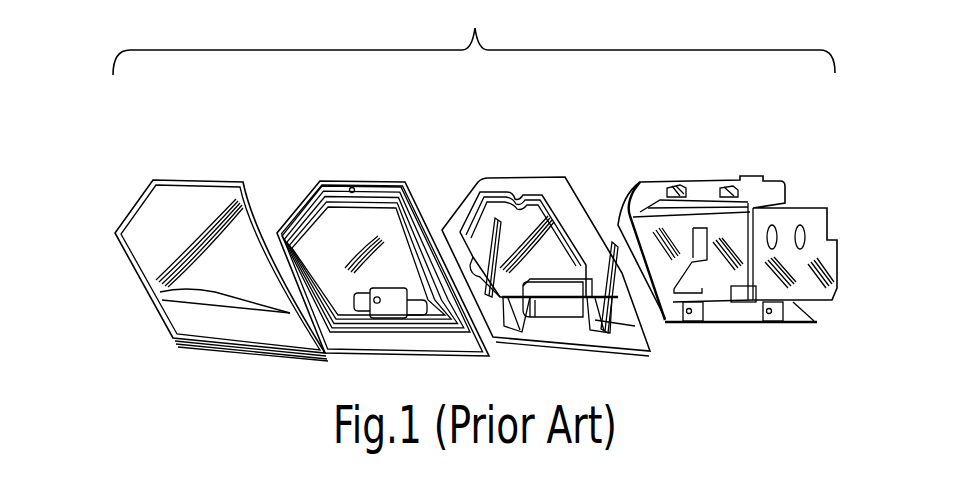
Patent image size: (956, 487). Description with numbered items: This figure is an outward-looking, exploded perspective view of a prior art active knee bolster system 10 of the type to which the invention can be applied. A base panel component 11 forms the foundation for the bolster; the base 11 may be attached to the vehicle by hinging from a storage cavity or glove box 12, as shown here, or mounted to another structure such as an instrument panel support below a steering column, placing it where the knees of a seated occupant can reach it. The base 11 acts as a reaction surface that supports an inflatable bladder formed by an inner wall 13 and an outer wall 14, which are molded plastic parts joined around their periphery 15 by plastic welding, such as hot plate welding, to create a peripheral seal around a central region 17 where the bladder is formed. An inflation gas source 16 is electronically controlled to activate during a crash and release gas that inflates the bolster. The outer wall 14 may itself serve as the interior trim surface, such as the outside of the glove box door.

The active knee bolster system 10 is at (474, 38).
The base panel component 11 is at (503, 176).
The glove box 12 is at (682, 179).
The inner wall 13 is at (383, 250).
The outer wall 14 is at (205, 176).
The periphery 15 is at (383, 183).
The inflation gas source 16 is at (393, 309).
The central region 17 is at (378, 231).